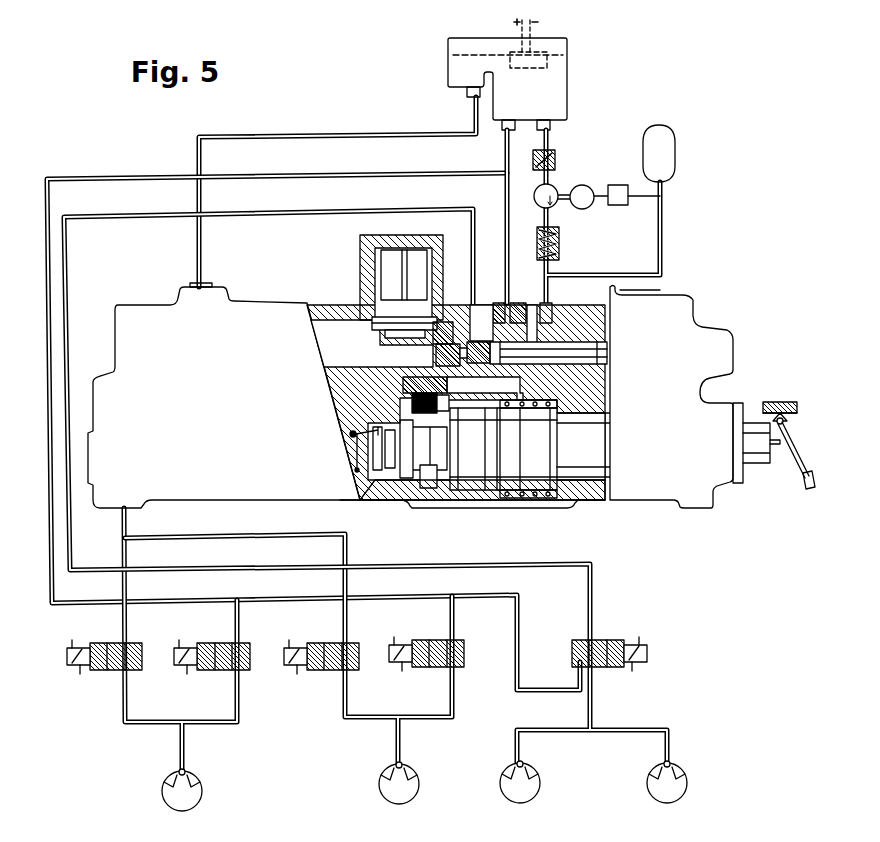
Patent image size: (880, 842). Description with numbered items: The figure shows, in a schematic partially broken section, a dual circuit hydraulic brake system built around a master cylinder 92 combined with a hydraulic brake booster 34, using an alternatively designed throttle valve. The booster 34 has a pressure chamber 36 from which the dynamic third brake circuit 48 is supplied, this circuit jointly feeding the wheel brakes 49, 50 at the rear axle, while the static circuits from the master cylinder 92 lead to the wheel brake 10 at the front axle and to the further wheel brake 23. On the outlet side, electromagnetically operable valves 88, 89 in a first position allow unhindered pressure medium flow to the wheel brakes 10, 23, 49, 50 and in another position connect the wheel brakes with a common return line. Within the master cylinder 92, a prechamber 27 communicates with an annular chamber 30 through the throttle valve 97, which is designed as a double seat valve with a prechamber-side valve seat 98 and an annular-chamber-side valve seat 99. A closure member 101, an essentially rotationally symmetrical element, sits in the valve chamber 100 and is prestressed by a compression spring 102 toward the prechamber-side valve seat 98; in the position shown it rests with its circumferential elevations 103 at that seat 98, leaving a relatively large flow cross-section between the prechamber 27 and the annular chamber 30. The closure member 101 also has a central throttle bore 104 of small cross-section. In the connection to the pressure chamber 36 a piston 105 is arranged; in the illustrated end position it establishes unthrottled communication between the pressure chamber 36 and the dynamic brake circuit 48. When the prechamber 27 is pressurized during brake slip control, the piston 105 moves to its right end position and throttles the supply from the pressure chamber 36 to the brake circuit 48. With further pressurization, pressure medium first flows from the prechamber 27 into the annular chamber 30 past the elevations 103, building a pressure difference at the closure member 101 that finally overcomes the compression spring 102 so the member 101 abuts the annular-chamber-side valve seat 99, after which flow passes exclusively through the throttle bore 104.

The wheel brake 10 is at (202, 793).
The wheel brake 23 is at (380, 784).
The prechamber 27 is at (317, 307).
The annular chamber 30 is at (437, 488).
The hydraulic brake booster 34 is at (596, 506).
The pressure chamber 36 is at (600, 388).
The third brake circuit 48 is at (305, 215).
The wheel brake 49 is at (502, 783).
The wheel brake 50 is at (650, 781).
The electromagnetically operable valve 88 is at (110, 671).
The electromagnetically operable valve 89 is at (330, 671).
The master cylinder 92 is at (363, 501).
The throttle valve 97 is at (489, 302).
The prechamber-side valve seat 98 is at (358, 308).
The annular-chamber-side valve seat 99 is at (410, 408).
The valve chamber 100 is at (404, 396).
The closure member 101 is at (441, 490).
The compression spring 102 is at (420, 362).
The circumferential elevations 103 is at (452, 305).
The throttle bore 104 is at (350, 434).
The piston 105 is at (519, 304).